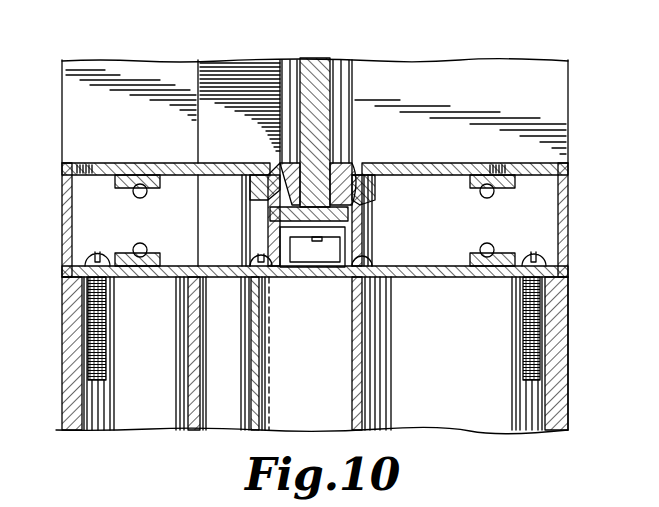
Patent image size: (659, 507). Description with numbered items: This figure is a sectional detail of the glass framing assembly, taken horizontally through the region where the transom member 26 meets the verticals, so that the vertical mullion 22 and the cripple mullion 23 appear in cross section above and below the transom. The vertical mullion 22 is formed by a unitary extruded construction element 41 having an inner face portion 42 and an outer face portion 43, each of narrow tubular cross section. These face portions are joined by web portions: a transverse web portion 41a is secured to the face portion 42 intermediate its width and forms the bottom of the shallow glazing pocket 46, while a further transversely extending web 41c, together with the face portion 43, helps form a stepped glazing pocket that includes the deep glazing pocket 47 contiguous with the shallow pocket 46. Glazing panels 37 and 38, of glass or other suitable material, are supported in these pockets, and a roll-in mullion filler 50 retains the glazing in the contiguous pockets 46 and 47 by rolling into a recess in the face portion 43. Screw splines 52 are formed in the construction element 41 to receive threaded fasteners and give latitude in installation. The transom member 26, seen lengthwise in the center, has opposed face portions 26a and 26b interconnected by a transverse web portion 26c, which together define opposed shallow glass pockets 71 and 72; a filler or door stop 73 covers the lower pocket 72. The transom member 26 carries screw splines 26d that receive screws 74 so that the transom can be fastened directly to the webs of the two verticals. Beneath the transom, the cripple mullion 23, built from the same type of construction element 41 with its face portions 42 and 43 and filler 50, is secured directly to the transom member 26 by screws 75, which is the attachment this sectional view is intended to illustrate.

The vertical mullion 22 is at (104, 62).
The cripple mullion 23 is at (58, 430).
The transom member 26 is at (311, 224).
The face portion 26a is at (62, 216).
The face portion 26b is at (570, 210).
The transverse web portion 26c is at (362, 212).
The screw splines 26d is at (132, 164).
The glazing panel 37 is at (315, 62).
The glazing panel 38 is at (14, 296).
The construction element 41 is at (500, 72).
The transverse web portion 41a is at (340, 406).
The transversely extending web 41c is at (206, 422).
The inner face portion 42 is at (580, 46).
The outer face portion 43 is at (62, 76).
The shallow glazing pocket 46 is at (312, 373).
The deep glazing pocket 47 is at (230, 365).
The mullion filler 50 is at (229, 78).
The screw splines 52 is at (98, 432).
The shallow glass pocket 71 is at (296, 211).
The shallow glass pocket 72 is at (345, 272).
The filler 73 is at (306, 280).
The screws 74 is at (148, 248).
The screws 75 is at (92, 256).